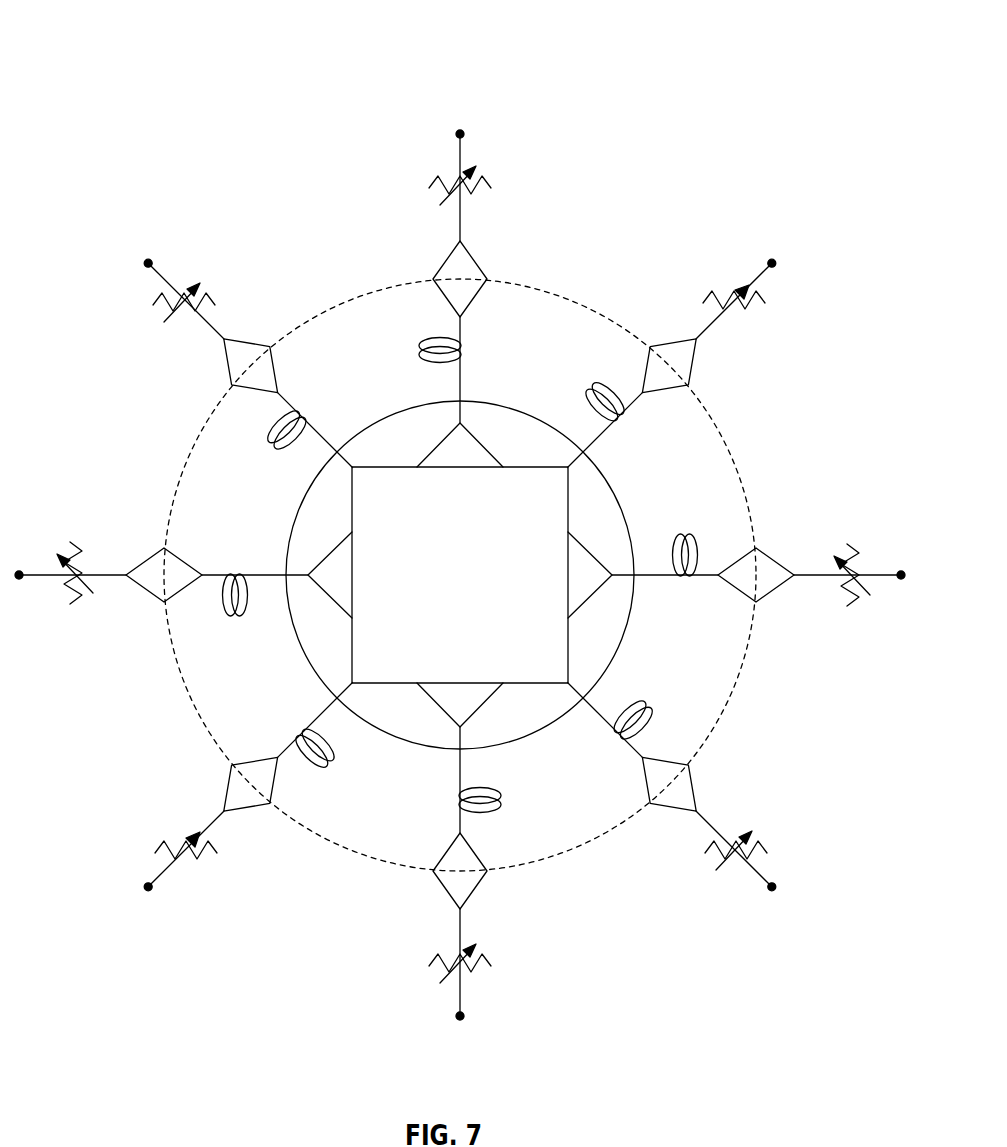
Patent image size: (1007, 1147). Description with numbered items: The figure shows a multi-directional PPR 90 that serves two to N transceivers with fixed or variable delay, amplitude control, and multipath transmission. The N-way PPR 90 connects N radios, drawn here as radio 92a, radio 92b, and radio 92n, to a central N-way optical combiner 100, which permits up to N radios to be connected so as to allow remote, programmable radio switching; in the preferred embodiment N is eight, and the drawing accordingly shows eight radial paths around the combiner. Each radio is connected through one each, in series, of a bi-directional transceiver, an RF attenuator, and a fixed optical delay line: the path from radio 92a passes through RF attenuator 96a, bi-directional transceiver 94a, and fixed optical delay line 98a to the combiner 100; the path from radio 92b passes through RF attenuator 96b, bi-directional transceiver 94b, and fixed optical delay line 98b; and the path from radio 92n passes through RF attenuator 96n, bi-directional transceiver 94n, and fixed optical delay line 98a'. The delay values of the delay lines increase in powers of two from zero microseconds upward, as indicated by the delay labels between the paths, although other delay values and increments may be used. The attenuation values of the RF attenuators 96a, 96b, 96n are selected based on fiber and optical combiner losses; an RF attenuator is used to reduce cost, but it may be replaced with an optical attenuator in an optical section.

The multi-directional PPR 90 is at (118, 46).
The radio 92a is at (83, 340).
The radio 92b is at (360, 178).
The radio 92n is at (63, 643).
The bi-directional transceiver 94a is at (276, 367).
The bi-directional transceiver 94b is at (476, 258).
The bi-directional transceiver 94n is at (145, 562).
The RF attenuator 96a is at (215, 303).
The RF attenuator 96b is at (492, 190).
The RF attenuator 96n is at (73, 545).
The fixed optical delay line 98a is at (312, 419).
The fixed optical delay line 98a' is at (246, 566).
The fixed optical delay line 98b is at (458, 352).
The N-way optical combiner 100 is at (570, 484).